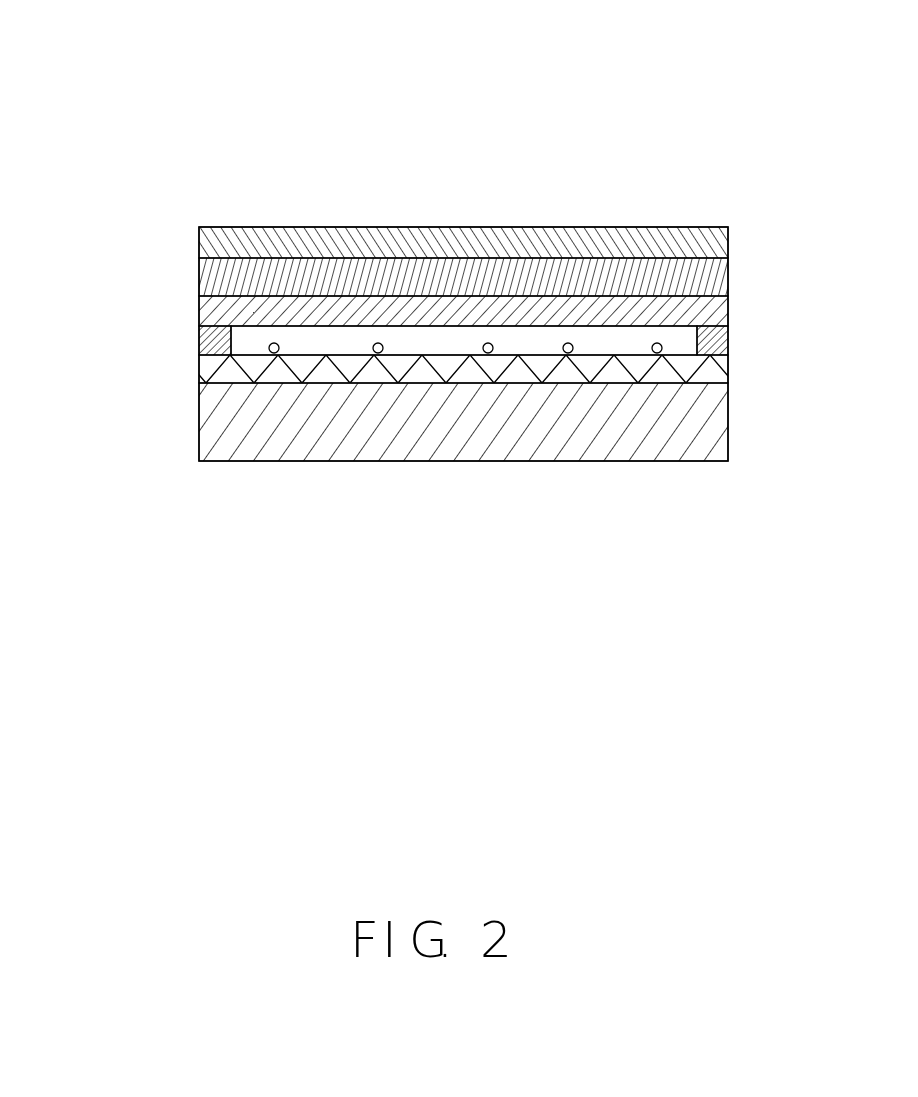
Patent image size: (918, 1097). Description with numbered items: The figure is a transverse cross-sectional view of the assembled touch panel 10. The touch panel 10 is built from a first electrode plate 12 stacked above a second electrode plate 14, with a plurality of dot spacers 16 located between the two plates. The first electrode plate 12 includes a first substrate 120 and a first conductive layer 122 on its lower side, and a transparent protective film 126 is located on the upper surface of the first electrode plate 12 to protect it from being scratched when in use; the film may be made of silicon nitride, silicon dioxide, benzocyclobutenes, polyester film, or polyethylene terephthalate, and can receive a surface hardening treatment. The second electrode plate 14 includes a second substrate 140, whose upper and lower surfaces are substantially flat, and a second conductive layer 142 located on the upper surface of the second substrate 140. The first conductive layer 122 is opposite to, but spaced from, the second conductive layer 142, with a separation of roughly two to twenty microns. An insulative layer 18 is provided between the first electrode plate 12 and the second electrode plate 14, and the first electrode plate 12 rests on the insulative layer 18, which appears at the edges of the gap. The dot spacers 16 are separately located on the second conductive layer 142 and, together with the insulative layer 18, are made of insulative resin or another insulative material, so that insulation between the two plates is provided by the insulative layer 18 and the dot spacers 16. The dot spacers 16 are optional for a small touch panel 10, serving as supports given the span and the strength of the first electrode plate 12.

The touch panel 10 is at (450, 43).
The first electrode plate 12 is at (94, 256).
The transparent protective film 126 is at (199, 238).
The first substrate 120 is at (199, 270).
The first conductive layer 122 is at (199, 304).
The dot spacers 16 is at (269, 346).
The insulative layer 18 is at (728, 330).
The second electrode plate 14 is at (94, 357).
The second conductive layer 142 is at (199, 363).
The second substrate 140 is at (199, 427).